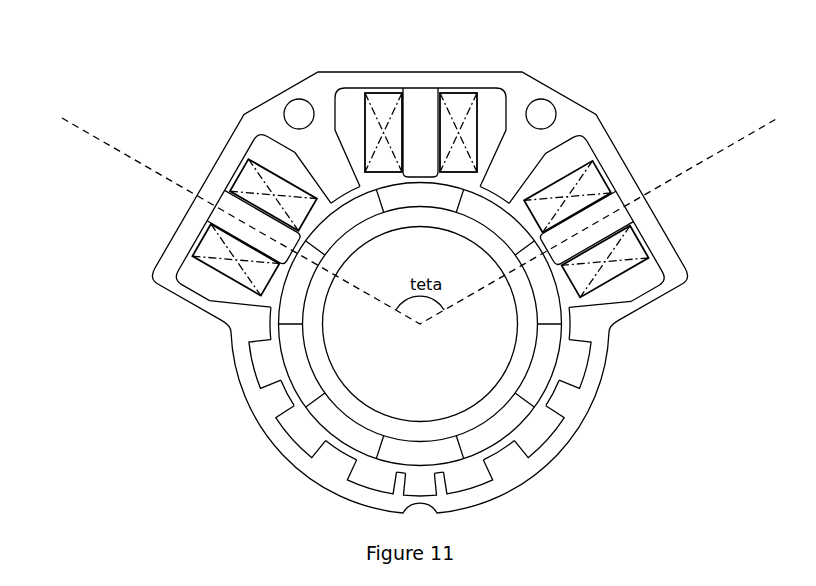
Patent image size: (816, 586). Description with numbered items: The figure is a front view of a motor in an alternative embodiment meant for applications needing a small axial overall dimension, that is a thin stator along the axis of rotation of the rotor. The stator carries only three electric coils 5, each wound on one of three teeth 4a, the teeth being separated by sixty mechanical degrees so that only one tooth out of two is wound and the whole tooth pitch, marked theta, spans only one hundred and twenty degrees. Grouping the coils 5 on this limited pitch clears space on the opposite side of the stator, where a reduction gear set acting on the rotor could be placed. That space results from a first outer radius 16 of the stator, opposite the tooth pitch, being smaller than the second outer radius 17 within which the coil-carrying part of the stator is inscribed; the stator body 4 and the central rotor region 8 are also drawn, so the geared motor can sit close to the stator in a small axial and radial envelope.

The stator 4 is at (562, 403).
The tooth 4a is at (423, 108).
The electric coil 5 is at (462, 108).
The stator core ring 8 is at (546, 360).
The first outer radius 16 is at (556, 466).
The second outer radius 17 is at (602, 115).